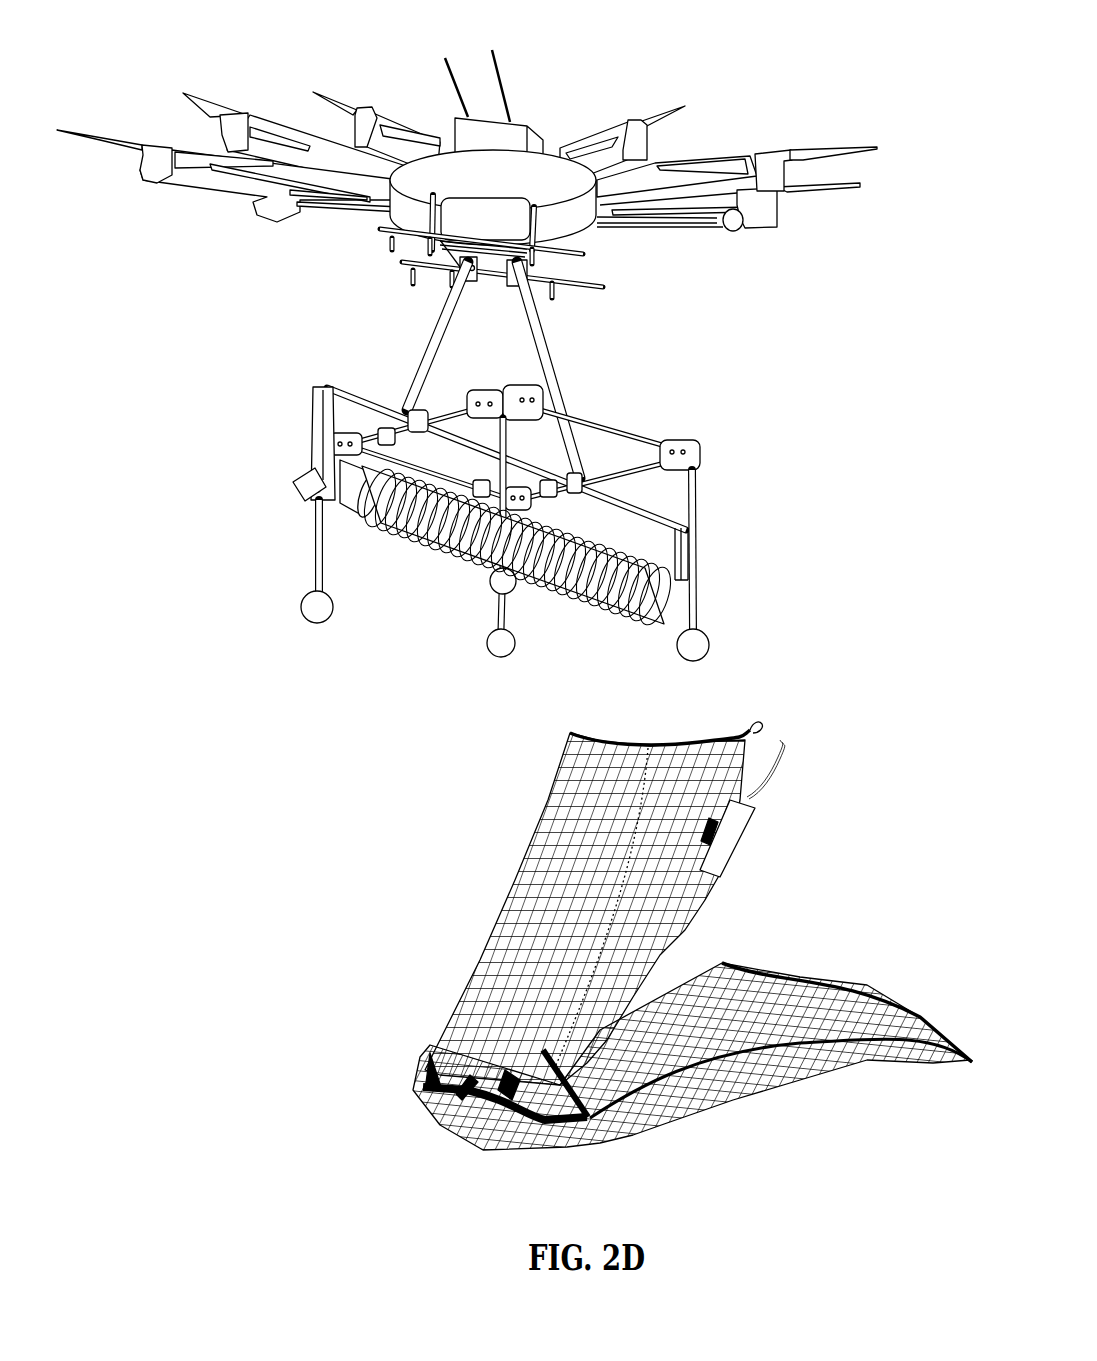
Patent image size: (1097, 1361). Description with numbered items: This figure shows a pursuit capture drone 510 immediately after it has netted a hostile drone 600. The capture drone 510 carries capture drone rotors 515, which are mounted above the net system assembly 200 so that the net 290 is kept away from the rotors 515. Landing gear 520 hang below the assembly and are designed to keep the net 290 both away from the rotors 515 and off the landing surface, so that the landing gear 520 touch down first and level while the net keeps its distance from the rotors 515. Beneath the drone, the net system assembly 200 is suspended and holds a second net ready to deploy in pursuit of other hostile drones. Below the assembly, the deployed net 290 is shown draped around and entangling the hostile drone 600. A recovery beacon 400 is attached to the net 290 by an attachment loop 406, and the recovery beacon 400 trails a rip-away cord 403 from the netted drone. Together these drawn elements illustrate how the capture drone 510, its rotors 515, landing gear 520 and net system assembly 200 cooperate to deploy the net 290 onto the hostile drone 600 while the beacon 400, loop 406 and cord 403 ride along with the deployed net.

The net system assembly 200 is at (445, 570).
The net 290 is at (593, 590).
The recovery beacon 400 is at (746, 851).
The rip-away cord 403 is at (778, 762).
The attachment loop 406 is at (668, 749).
The capture drone 510 is at (581, 104).
The capture drone rotors 515 is at (797, 153).
The landing gear 520 is at (313, 560).
The hostile drone 600 is at (453, 1028).